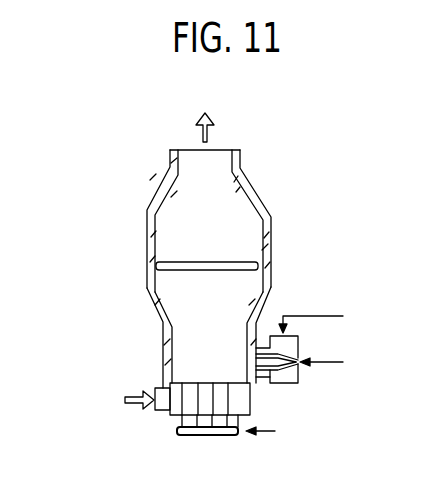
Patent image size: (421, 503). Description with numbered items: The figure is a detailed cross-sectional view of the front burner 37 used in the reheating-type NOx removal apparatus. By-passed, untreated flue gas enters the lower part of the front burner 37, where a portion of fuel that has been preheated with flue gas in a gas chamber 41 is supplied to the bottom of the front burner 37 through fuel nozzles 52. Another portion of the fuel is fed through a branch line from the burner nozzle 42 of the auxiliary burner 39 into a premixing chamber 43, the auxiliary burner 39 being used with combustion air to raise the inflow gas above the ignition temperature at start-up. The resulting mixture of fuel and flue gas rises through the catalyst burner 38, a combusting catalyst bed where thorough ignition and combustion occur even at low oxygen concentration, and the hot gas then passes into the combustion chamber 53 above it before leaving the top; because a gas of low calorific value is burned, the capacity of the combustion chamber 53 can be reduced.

The combustion chamber 53 is at (220, 195).
The front burner 37 is at (260, 200).
The catalyst burner 38 is at (236, 256).
The premixing chamber 43 is at (192, 327).
The burner nozzle 42 is at (299, 354).
The auxiliary burner 39 is at (299, 381).
The fuel nozzles 52 is at (232, 391).
The gas chamber 41 is at (177, 418).